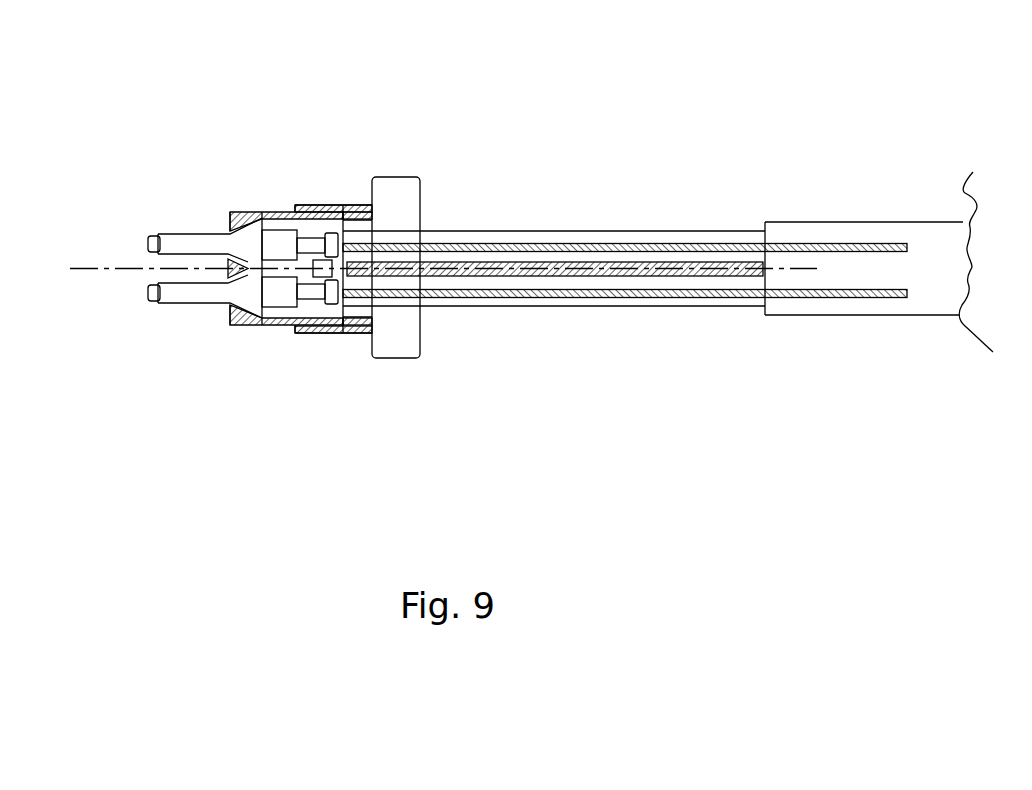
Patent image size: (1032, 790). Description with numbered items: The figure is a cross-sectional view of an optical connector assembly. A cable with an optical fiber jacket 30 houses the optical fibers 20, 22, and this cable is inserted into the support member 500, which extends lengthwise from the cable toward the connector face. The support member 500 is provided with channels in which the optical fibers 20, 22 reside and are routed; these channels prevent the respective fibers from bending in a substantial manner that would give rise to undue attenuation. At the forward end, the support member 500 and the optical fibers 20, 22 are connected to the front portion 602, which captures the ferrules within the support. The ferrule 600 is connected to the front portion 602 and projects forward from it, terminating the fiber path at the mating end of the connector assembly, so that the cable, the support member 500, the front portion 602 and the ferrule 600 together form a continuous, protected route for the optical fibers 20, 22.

The ferrule 600 is at (197, 302).
The front portion 602 is at (236, 212).
The support member 500 is at (455, 233).
The optical fiber 22 is at (578, 292).
The optical fiber 20 is at (668, 247).
The optical fiber jacket 30 is at (938, 222).